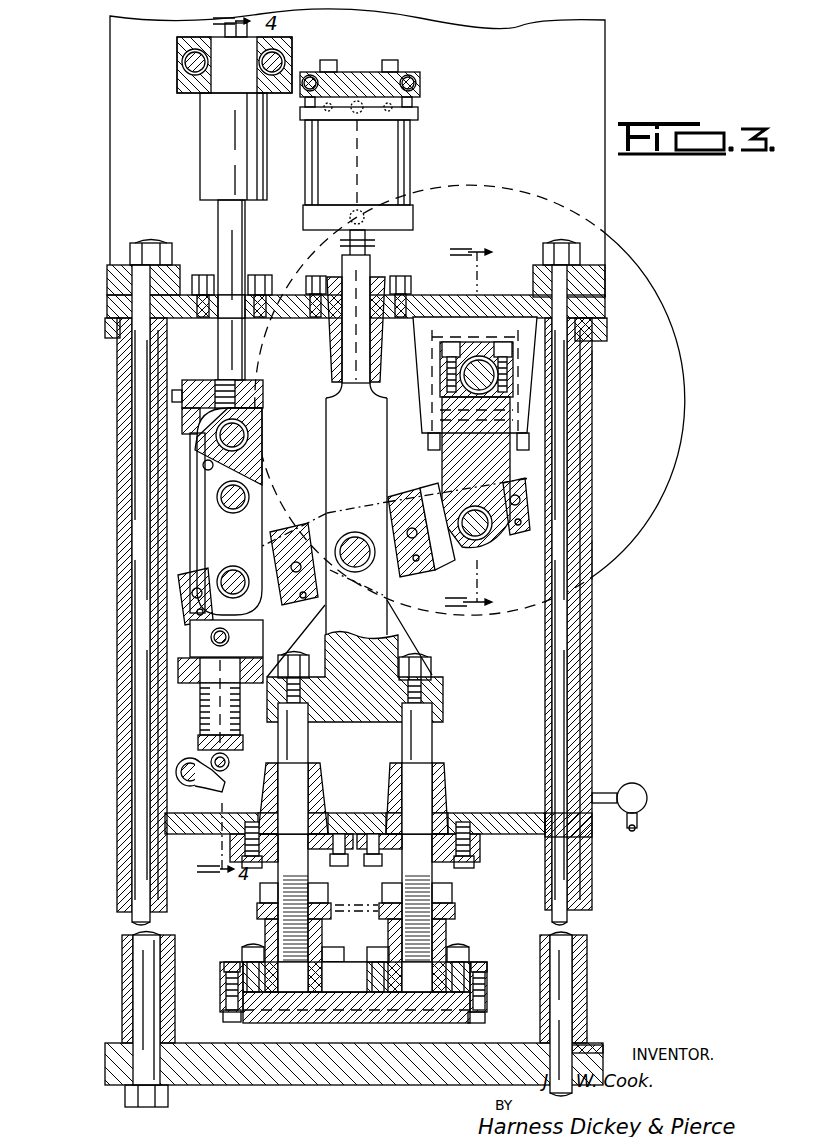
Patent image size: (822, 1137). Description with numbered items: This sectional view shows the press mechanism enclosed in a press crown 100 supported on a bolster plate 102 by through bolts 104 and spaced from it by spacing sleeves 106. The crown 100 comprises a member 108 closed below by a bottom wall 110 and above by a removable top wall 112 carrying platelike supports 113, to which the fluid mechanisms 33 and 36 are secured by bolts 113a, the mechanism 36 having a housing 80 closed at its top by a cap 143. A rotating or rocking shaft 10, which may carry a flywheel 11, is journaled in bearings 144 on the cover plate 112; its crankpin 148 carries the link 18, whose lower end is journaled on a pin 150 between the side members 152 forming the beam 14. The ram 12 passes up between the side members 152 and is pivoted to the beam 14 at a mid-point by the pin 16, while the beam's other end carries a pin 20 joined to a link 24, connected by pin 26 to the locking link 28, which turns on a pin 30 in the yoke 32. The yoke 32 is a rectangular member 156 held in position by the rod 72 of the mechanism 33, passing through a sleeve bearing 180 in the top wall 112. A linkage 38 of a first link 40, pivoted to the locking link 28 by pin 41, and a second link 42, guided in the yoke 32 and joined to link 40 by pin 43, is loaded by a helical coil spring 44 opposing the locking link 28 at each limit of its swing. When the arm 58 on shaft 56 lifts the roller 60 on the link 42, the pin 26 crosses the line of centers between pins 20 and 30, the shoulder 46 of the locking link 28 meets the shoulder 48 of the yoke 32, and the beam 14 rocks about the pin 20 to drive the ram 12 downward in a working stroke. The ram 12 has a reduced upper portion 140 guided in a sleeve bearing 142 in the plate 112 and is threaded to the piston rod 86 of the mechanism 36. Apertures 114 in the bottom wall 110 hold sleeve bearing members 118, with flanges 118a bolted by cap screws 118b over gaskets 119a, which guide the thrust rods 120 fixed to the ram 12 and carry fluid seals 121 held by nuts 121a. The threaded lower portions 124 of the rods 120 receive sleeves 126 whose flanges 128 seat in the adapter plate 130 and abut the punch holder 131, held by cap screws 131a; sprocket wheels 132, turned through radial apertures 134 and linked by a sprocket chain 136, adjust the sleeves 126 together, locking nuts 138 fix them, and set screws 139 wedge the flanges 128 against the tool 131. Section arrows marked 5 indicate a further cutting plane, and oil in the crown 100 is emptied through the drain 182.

The section line 5- 5 is at (481, 429).
The shaft 10 is at (585, 388).
The flywheel 11 is at (662, 288).
The ram 12 is at (383, 600).
The rockable beam 14 is at (422, 493).
The pin 16 is at (366, 527).
The link 18 is at (503, 470).
The pivot pin 20 is at (226, 575).
The link 24 is at (264, 520).
The pin 26 is at (262, 481).
The locking link 28 is at (268, 455).
The pin 30 is at (262, 427).
The yoke 32 is at (268, 392).
The fluid mechanism 33 is at (198, 122).
The fluid mechanism 36 is at (420, 138).
The linkage 38 is at (200, 628).
The first link 40 is at (204, 503).
The pin 41 is at (206, 466).
The second link 42 is at (242, 660).
The pin 43 is at (235, 637).
The helical coil spring 44 is at (238, 725).
The upwardly facing shoulder 46 is at (192, 428).
The downwardly facing shoulder 48 is at (200, 444).
The shaft 56 is at (193, 760).
The lever 58 is at (205, 790).
The roller 60 is at (230, 763).
The rod 72 is at (240, 250).
The housing 80 is at (413, 218).
The piston rod 86 is at (366, 258).
The press crown 100 is at (604, 560).
The bolster plate 102 is at (603, 1045).
The through bolts 104 is at (118, 603).
The spacing sleeves 106 is at (122, 908).
The member 108 is at (595, 432).
The bottom wall 110 is at (500, 812).
The top wall 112 is at (600, 318).
The platelike supports 113 is at (590, 78).
The bolts 113a is at (262, 64).
The apertures 114 is at (324, 812).
The sleeve bearing members 118 is at (324, 772).
The flanges 118a is at (240, 856).
The cap screws 118b is at (350, 872).
The gaskets 119a is at (247, 822).
The thrust rods 120 is at (306, 738).
The fluid seal 121 is at (304, 880).
The nuts 121a is at (440, 892).
The screw threaded portion 124 is at (264, 940).
The sleeves 126 is at (318, 775).
The flanges 128 is at (225, 983).
The adapter plate 130 is at (488, 995).
The punch holder 131 is at (285, 1022).
The cap screws 131a is at (228, 1023).
The sprocket wheel 132 is at (262, 900).
The radial aperture 134 is at (258, 921).
The sprocket chain 136 is at (452, 890).
The locking nuts 138 is at (264, 882).
The set screws 139 is at (245, 953).
The reduced diameter portion 140 is at (328, 352).
The sleeve bearing member 142 is at (397, 275).
The cylinder cap 143 is at (422, 86).
The bearing 144 is at (426, 372).
The crankpin 148 is at (472, 358).
The pin 150 is at (486, 537).
The side members 152 is at (455, 570).
The rectangular member 156 is at (268, 412).
The sleeve bearing 180 is at (252, 285).
The drain 182 is at (647, 793).